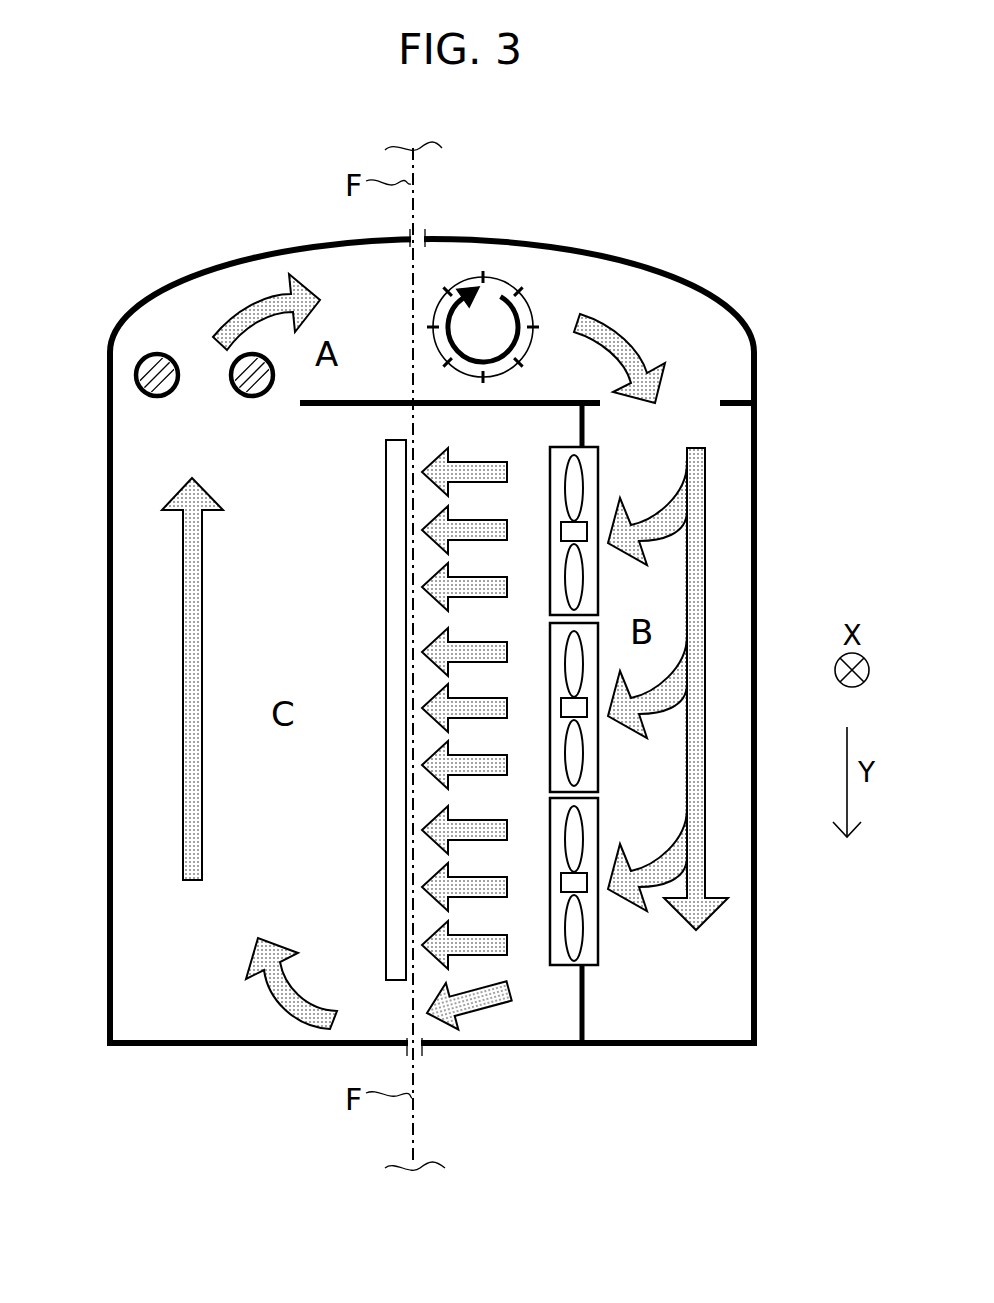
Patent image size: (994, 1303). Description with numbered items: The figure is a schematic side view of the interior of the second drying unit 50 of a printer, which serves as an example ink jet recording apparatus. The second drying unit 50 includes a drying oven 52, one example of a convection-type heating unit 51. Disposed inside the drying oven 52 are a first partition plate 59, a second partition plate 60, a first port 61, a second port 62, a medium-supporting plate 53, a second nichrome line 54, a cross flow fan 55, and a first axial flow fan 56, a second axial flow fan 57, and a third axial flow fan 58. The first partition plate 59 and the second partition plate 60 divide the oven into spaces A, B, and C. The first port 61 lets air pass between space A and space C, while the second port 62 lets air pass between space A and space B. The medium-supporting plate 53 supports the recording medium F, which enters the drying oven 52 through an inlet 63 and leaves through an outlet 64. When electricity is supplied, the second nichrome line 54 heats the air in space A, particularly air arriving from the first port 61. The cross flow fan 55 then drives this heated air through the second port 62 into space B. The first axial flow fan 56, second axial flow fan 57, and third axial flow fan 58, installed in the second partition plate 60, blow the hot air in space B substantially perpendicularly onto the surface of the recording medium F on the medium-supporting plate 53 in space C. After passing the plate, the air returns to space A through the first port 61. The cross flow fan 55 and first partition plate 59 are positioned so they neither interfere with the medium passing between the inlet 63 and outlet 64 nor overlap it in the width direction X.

The second drying unit 50 is at (413, 585).
The convection-type heating unit 51 is at (413, 585).
The drying oven 52 is at (125, 230).
The medium-supporting plate 53 is at (388, 716).
The second nichrome line 54 is at (240, 388).
The cross flow fan 55 is at (503, 276).
The first axial flow fan 56 is at (598, 496).
The second axial flow fan 57 is at (598, 748).
The third axial flow fan 58 is at (595, 942).
The first partition plate 59 is at (350, 402).
The second partition plate 60 is at (582, 990).
The first port 61 is at (283, 403).
The second port 62 is at (705, 402).
The inlet 63 is at (426, 231).
The outlet 64 is at (422, 1052).